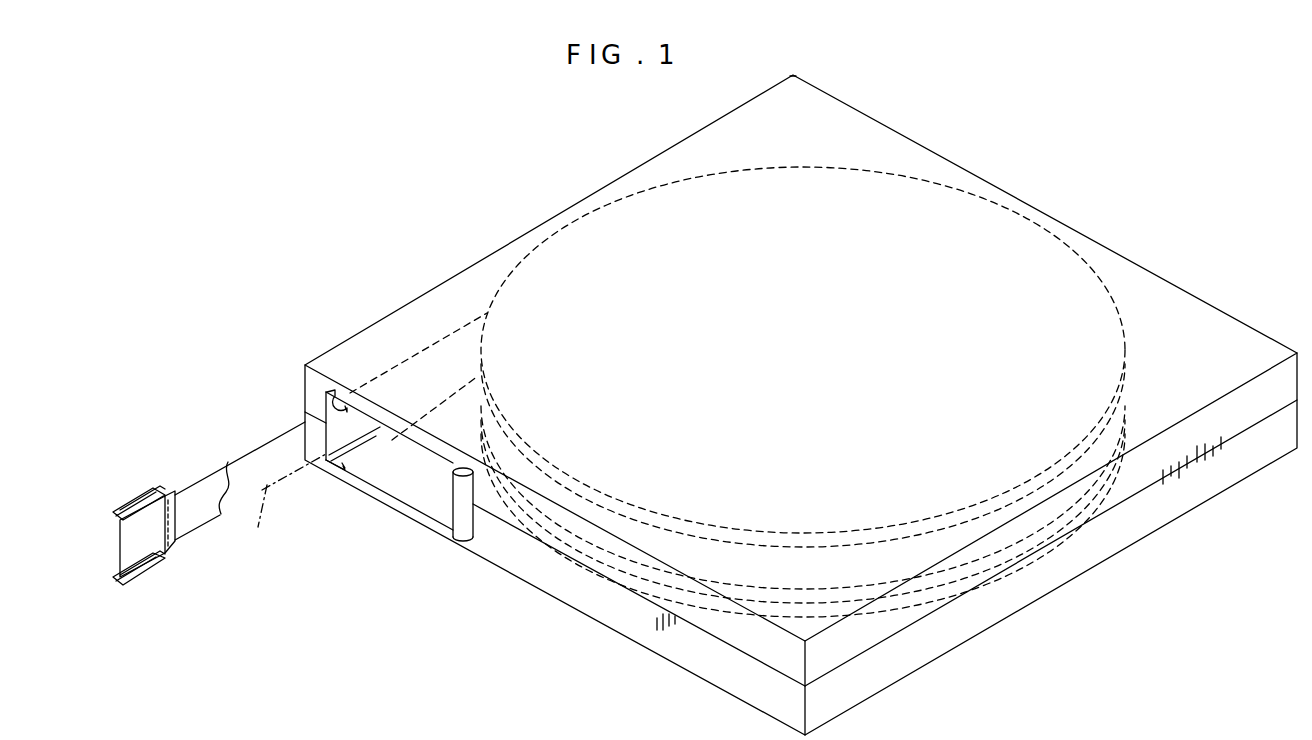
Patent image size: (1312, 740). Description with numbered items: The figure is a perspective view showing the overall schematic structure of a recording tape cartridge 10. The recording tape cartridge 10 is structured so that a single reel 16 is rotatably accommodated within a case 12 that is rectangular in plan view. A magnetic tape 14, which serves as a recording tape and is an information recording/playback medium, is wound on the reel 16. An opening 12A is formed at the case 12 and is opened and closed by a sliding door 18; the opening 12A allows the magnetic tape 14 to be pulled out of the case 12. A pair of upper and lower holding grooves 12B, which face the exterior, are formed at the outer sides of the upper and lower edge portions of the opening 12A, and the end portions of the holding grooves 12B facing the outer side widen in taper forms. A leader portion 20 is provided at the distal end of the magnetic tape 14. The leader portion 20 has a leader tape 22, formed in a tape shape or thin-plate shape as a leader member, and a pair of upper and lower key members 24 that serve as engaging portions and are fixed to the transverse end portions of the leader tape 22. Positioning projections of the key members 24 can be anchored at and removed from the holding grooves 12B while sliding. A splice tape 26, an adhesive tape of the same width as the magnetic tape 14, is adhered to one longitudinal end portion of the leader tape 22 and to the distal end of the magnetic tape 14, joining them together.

The recording tape cartridge 10 is at (985, 131).
The case 12 is at (838, 120).
The opening 12A is at (418, 480).
The holding grooves 12B is at (348, 402).
The magnetic tape 14 is at (445, 352).
The reel 16 is at (1043, 250).
The sliding door 18 is at (467, 530).
The leader portion 20 is at (55, 517).
The leader tape 22 is at (130, 552).
The key members 24 is at (113, 511).
The splice tape 26 is at (172, 536).